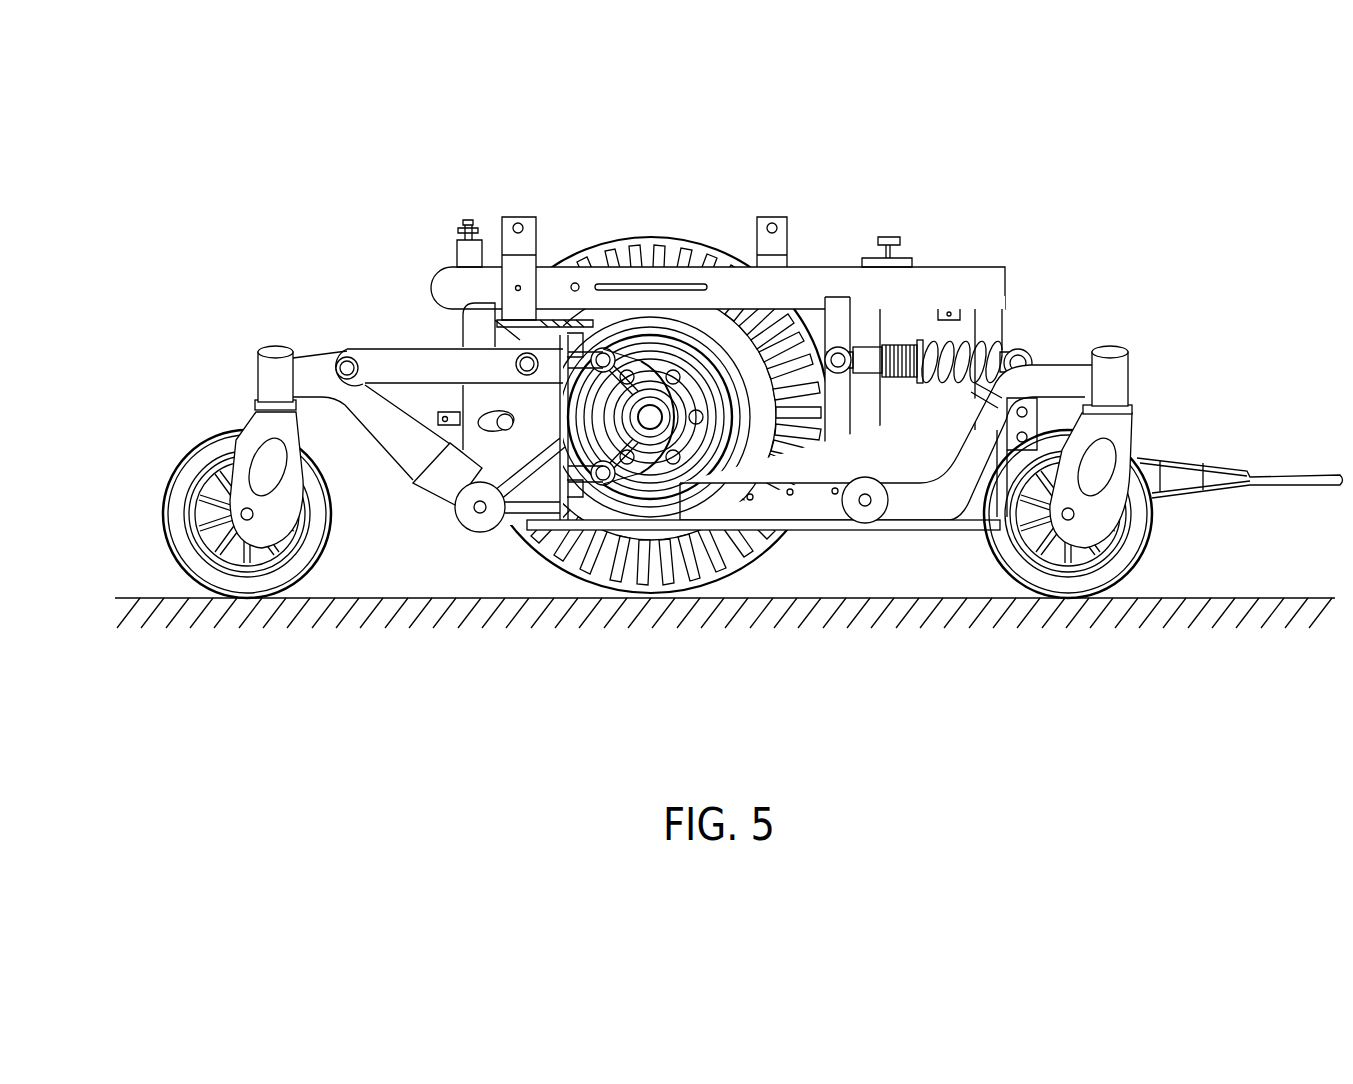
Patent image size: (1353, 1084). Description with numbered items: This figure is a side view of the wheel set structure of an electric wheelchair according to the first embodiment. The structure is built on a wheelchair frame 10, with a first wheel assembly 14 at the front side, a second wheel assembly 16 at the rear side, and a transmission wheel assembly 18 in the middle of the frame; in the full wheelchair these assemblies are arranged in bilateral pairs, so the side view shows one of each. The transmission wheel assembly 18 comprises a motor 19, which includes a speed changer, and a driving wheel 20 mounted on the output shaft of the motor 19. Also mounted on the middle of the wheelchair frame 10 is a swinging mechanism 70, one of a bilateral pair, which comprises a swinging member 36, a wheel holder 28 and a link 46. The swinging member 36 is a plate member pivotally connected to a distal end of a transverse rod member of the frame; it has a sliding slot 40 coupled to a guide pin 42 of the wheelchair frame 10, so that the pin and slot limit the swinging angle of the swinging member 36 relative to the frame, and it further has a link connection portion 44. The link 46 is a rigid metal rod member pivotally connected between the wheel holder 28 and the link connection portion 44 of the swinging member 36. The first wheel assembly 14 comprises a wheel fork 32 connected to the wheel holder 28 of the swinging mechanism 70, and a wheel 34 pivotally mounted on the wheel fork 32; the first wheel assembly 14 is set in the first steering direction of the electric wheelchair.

The wheelchair frame 10 is at (958, 264).
The first wheel assembly 14 is at (198, 472).
The second wheel assembly 16 is at (1150, 534).
The transmission wheel assembly 18 is at (651, 490).
The motor 19 is at (657, 445).
The driving wheel 20 is at (758, 566).
The wheel holder 28 is at (380, 427).
The wheel fork 32 is at (243, 445).
The wheel 34 is at (163, 513).
The swinging member 36 is at (520, 522).
The sliding slot 40 is at (490, 395).
The guide pin 42 is at (505, 414).
The link connection portion 44 is at (548, 335).
The link 46 is at (418, 377).
The swinging mechanism 70 is at (448, 460).